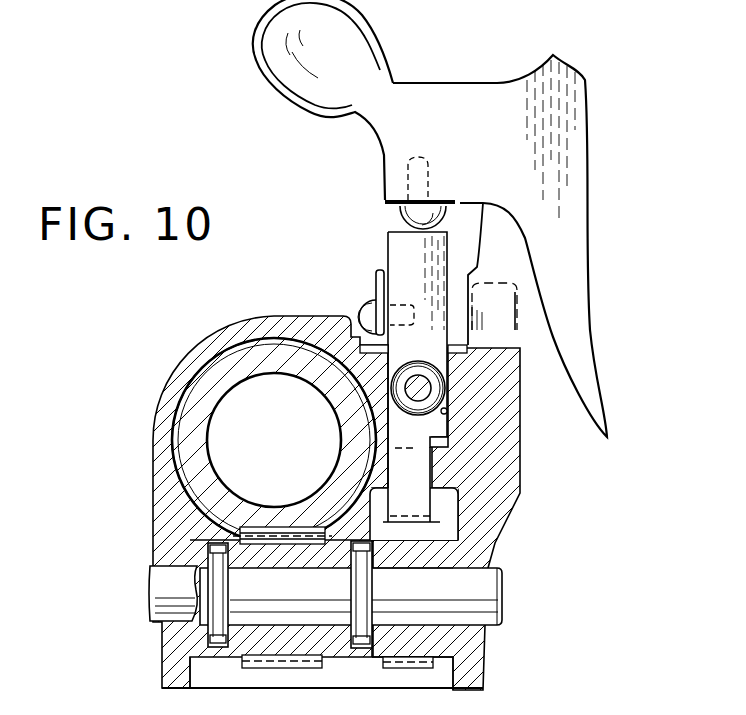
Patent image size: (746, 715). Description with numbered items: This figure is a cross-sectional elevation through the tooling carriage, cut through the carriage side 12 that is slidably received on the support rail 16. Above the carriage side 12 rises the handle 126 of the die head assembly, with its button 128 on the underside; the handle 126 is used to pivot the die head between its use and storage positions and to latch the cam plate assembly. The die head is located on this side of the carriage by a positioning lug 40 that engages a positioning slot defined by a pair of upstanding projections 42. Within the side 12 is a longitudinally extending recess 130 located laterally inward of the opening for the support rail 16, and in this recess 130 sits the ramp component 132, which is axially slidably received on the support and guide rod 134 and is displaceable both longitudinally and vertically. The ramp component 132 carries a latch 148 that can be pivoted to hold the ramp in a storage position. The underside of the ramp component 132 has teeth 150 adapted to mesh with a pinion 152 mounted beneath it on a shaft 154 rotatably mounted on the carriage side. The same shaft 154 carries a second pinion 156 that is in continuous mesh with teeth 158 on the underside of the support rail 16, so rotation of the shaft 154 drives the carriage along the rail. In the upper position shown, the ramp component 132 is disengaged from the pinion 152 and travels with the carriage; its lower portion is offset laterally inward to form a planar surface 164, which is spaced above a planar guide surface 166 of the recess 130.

The side 12 is at (150, 360).
The support rail 16 is at (193, 397).
The positioning lug 40 is at (497, 298).
The upstanding projections 42 is at (503, 318).
The handle 126 is at (302, 97).
The button 128 is at (400, 212).
The recess 130 is at (446, 411).
The ramp component 132 is at (410, 248).
The support and guide rod 134 is at (432, 372).
The latch 148 is at (372, 282).
The teeth 150 is at (410, 517).
The pinion 152 is at (440, 556).
The shaft 154 is at (480, 596).
The pinion 156 is at (243, 650).
The teeth 158 is at (273, 530).
The planar surface 164 is at (392, 455).
The planar guide surface 166 is at (427, 440).